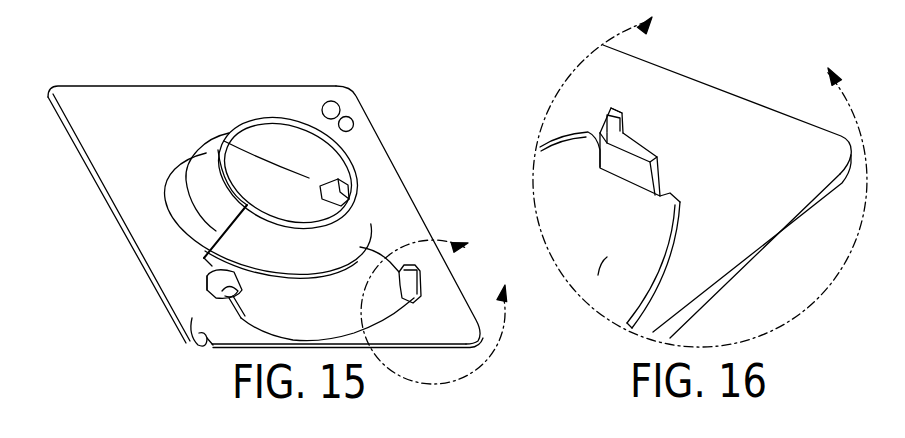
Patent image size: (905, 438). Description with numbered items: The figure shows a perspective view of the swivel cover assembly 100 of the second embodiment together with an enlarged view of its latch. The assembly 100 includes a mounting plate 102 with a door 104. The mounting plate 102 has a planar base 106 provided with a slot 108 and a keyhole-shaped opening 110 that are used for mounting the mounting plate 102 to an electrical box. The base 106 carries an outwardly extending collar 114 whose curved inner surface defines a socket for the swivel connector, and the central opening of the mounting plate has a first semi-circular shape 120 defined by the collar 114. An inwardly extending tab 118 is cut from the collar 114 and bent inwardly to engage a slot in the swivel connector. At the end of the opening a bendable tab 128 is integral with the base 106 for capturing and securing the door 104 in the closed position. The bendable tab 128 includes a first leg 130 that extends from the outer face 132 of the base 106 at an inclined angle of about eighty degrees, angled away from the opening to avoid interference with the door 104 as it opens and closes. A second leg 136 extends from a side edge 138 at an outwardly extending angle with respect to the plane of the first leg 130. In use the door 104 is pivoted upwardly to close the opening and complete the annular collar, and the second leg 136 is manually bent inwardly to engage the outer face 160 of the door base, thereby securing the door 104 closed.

In FIG. 15, the assembly 100 is at (277, 211).
In FIG. 15, the mounting plate 102 is at (124, 259).
In FIG. 15, the door 104 is at (378, 242).
In FIG. 16, the door 104 is at (683, 187).
In FIG. 15, the planar base 106 is at (374, 141).
In FIG. 16, the planar base 106 is at (738, 268).
In FIG. 15, the slot 108 is at (182, 328).
In FIG. 15, the keyhole-shaped opening 110 is at (318, 111).
In FIG. 15, the collar 114 is at (204, 163).
In FIG. 15, the inwardly extending tab 118 is at (335, 181).
In FIG. 15, the first semi-circular shape 120 is at (246, 165).
In FIG. 16, the bendable tab 128 is at (617, 81).
In FIG. 16, the first leg 130 is at (630, 167).
In FIG. 16, the outer face 132 is at (750, 130).
In FIG. 16, the second leg 136 is at (600, 118).
In FIG. 16, the side edge 138 is at (597, 148).
In FIG. 16, the outer face 160 is at (607, 257).